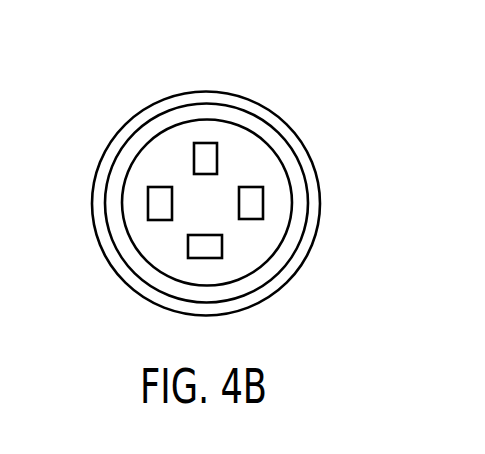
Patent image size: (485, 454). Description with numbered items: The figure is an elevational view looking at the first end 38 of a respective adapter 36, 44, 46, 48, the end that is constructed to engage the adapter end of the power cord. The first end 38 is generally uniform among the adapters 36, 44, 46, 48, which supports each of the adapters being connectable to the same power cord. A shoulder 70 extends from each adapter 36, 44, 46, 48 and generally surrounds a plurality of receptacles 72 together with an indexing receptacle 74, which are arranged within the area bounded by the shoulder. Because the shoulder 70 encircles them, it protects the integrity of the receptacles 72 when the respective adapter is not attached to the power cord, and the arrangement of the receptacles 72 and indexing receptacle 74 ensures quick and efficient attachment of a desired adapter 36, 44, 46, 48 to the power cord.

The adapter 36 is at (218, 169).
The adapter 44 is at (218, 169).
The adapter 46 is at (218, 169).
The adapter 48 is at (227, 52).
The first end 38 is at (88, 115).
The shoulder 70 is at (280, 147).
The plurality of receptacles 72 is at (172, 238).
The indexing receptacle 74 is at (213, 255).